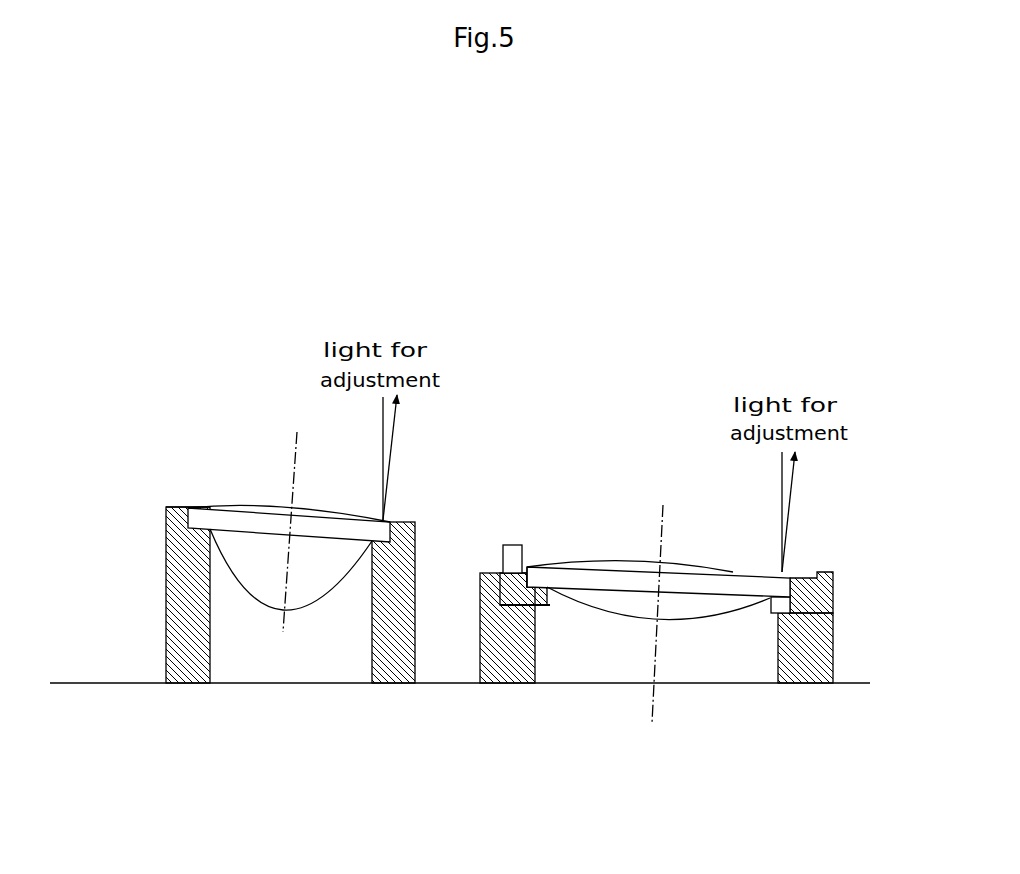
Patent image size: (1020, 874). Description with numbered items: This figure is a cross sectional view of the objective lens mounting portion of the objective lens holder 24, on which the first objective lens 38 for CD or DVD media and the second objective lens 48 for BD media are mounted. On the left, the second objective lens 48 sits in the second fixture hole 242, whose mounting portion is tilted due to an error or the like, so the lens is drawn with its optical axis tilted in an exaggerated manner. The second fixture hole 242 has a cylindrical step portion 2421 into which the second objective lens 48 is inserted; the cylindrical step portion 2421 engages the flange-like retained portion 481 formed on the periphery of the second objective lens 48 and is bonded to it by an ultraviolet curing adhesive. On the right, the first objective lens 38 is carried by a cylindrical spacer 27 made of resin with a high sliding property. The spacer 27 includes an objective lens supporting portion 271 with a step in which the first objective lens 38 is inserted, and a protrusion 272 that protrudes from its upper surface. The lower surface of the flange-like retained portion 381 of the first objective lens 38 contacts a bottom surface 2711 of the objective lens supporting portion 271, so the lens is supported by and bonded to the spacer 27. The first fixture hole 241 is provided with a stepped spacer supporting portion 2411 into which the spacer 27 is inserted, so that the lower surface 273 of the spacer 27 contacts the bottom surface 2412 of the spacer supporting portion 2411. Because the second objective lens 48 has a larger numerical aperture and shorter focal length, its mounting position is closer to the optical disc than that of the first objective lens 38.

The objective lens holder 24 is at (477, 422).
The second fixture hole 242 is at (178, 587).
The cylindrical step portion 2421 is at (170, 520).
The second objective lens 48 is at (248, 520).
The flange-like retained portion 481 is at (187, 510).
The spacer supporting portion 2411 is at (500, 603).
The bottom surface 2412 is at (533, 607).
The objective lens supporting portion 271 is at (500, 572).
The bottom surface 2711 is at (550, 568).
The protrusion 272 is at (510, 545).
The first fixture hole 241 is at (770, 667).
The spacer 27 is at (833, 572).
The lower surface 273 is at (772, 617).
The first objective lens 38 is at (728, 570).
The flange-like retained portion 381 is at (541, 581).